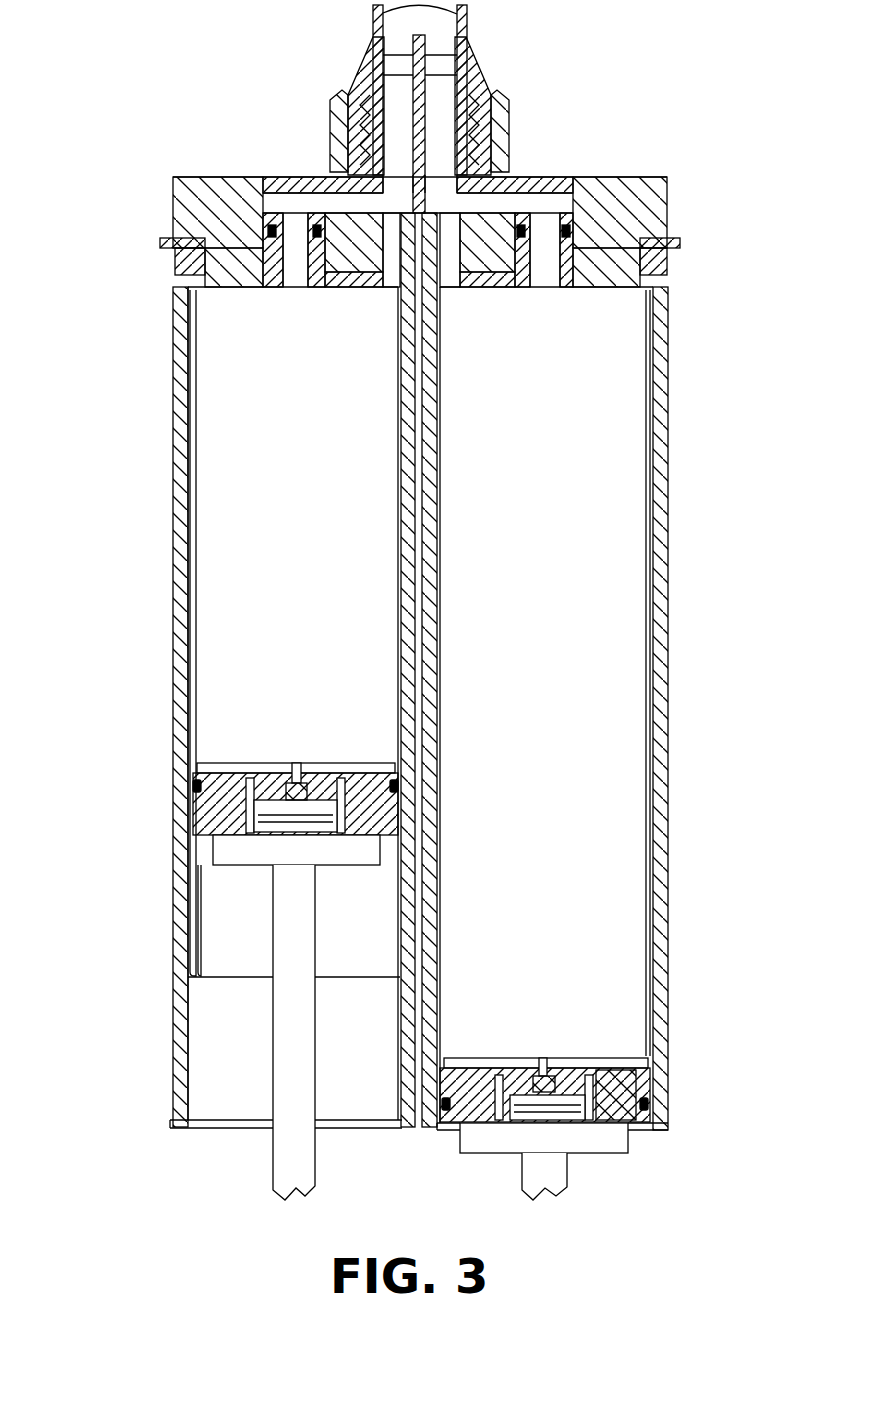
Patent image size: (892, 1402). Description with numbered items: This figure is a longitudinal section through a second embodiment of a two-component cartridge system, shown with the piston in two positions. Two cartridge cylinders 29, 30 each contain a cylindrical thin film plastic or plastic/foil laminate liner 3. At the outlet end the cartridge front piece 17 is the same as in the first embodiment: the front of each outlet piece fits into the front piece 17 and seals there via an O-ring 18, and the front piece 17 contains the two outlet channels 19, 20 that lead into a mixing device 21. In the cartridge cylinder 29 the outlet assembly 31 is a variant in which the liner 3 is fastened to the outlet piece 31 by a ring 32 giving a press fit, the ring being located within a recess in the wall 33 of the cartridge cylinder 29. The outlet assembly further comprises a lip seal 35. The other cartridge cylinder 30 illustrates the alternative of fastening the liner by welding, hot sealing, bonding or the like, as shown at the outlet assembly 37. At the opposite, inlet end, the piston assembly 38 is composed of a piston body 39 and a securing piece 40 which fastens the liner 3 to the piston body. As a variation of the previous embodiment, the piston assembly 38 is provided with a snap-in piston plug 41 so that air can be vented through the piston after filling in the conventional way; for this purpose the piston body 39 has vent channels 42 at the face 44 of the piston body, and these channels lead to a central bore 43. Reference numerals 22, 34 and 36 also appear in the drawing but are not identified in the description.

The liner 3 is at (195, 606).
The cartridge front piece 17 is at (660, 175).
The O-ring 18 is at (429, 199).
The outlet channel 19 is at (398, 132).
The outlet channel 20 is at (444, 132).
The mixing device 21 is at (468, 13).
The piston rod 22 is at (290, 1160).
The cartridge cylinder 29 is at (261, 707).
The cartridge cylinder 30 is at (585, 708).
The outlet assembly 31 is at (319, 294).
The ring 32 is at (178, 241).
The wall 33 is at (183, 378).
The seal ring 34 is at (183, 262).
The lip seal 35 is at (410, 288).
The inlet passage 36 is at (292, 284).
The outlet assembly 37 is at (606, 295).
The piston assembly 38 is at (530, 1055).
The piston body 39 is at (606, 1068).
The securing piece 40 is at (650, 1104).
The snap-in piston plug 41 is at (520, 1130).
The vent channels 42 is at (243, 762).
The central bore 43 is at (548, 1066).
The face 44 is at (329, 757).